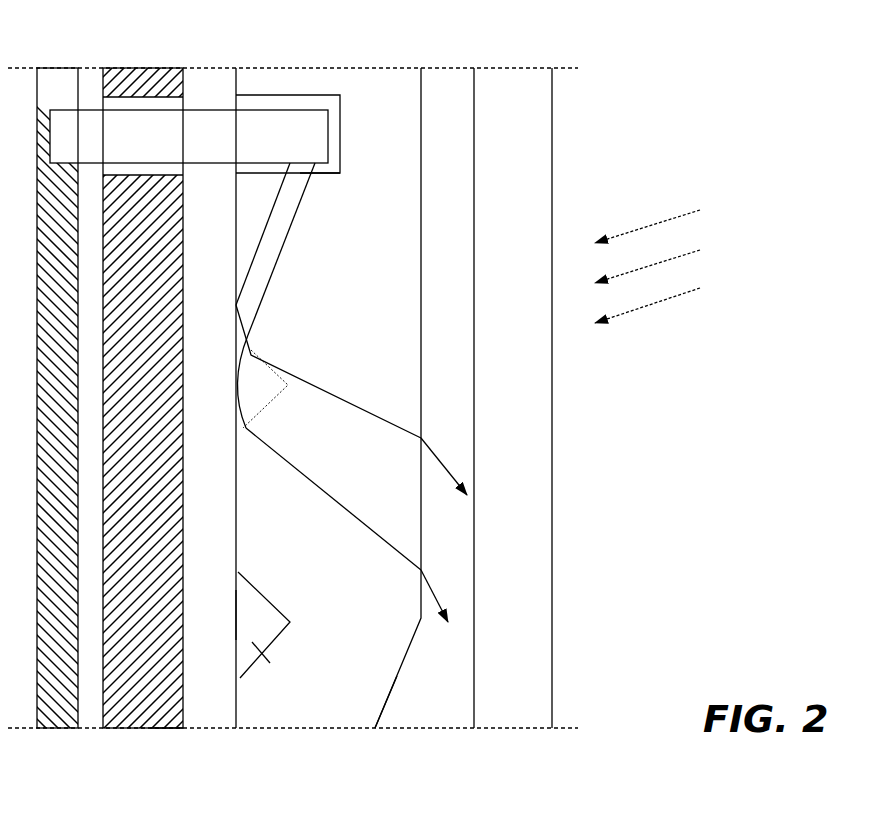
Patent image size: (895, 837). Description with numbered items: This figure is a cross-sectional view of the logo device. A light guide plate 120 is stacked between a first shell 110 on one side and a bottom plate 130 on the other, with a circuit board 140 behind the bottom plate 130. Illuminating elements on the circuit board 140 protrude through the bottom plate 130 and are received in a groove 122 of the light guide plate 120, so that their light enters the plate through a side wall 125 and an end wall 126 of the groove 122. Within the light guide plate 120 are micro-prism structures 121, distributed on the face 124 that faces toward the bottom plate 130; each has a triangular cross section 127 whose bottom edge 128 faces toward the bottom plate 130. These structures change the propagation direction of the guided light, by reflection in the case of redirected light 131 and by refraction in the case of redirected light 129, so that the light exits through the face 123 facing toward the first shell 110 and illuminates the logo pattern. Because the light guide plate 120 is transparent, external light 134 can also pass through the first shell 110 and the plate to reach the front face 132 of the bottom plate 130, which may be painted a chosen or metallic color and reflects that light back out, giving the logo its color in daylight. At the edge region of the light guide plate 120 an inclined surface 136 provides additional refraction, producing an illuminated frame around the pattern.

The first shell 110 is at (309, 379).
The light guide plate 120 is at (310, 381).
The micro-prism structures 121 is at (295, 620).
The groove 122 is at (189, 85).
The face 123 is at (378, 398).
The face 124 is at (279, 437).
The side wall 125 is at (359, 184).
The end wall 126 is at (327, 134).
The triangular cross section 127 is at (298, 659).
The bottom edge 128 is at (211, 615).
The redirected light 129 is at (347, 392).
The bottom plate 130 is at (150, 418).
The redirected light 131 is at (351, 329).
The front face 132 is at (210, 746).
The external light 134 is at (620, 332).
The inclined surface 136 is at (420, 721).
The circuit board 140 is at (63, 431).